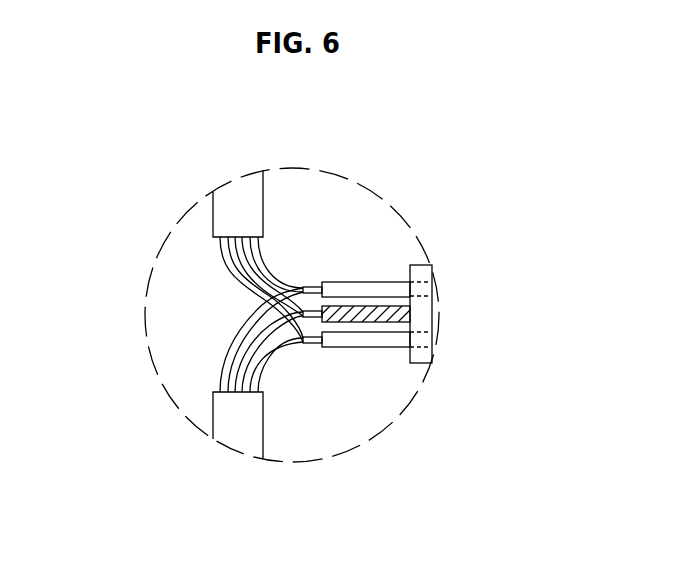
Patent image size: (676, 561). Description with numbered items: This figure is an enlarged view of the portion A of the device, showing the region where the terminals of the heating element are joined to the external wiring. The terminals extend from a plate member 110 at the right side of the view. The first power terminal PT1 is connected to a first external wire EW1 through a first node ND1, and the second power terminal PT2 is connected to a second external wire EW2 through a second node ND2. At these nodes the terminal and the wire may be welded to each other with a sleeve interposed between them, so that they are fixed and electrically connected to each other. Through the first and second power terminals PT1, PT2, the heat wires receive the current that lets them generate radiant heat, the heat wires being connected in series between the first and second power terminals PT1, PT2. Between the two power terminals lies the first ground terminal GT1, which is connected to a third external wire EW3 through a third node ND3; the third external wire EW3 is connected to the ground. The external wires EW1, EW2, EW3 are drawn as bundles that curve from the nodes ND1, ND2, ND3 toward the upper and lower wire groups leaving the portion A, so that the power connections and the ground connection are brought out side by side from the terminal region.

The first external wire EW1 is at (225, 246).
The second external wire EW2 is at (258, 312).
The third external wire EW3 is at (250, 288).
The first node ND1 is at (311, 287).
The second node ND2 is at (305, 345).
The third node ND3 is at (350, 307).
The first ground terminal GT1 is at (343, 282).
The first power terminal PT1 is at (373, 282).
The second power terminal PT2 is at (390, 347).
The terminal plate 110 is at (418, 265).
The portion A is at (420, 390).